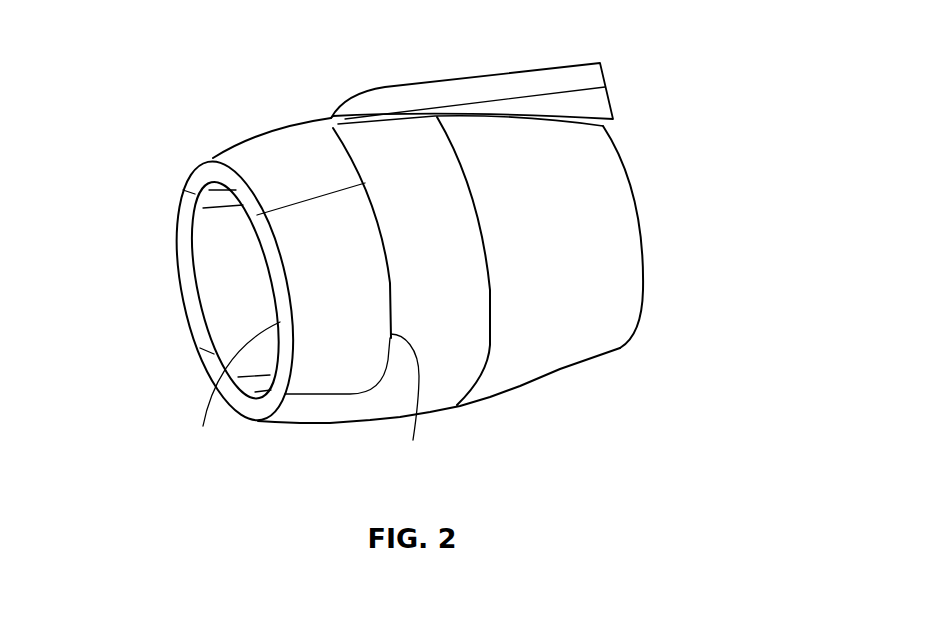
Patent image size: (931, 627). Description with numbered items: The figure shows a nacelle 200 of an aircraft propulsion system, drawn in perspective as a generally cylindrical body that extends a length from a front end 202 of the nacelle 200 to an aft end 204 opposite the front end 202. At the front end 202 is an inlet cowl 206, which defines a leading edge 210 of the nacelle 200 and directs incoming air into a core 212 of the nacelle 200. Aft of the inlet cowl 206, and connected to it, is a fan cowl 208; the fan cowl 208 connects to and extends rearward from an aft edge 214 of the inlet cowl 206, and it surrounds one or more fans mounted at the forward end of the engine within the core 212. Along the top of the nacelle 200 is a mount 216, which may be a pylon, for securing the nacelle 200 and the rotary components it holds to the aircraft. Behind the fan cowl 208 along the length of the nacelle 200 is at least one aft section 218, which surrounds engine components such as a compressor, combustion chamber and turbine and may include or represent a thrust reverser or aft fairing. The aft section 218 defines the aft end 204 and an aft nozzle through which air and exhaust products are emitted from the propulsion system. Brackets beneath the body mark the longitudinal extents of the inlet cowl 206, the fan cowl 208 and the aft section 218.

The nacelle 200 is at (218, 101).
The front end 202 is at (176, 334).
The aft end 204 is at (652, 247).
The inlet cowl 206 is at (277, 392).
The fan cowl 208 is at (392, 340).
The leading edge 210 is at (230, 390).
The core 212 is at (236, 251).
The aft edge 214 is at (413, 440).
The mount 216 is at (480, 95).
The aft section 218 is at (490, 300).